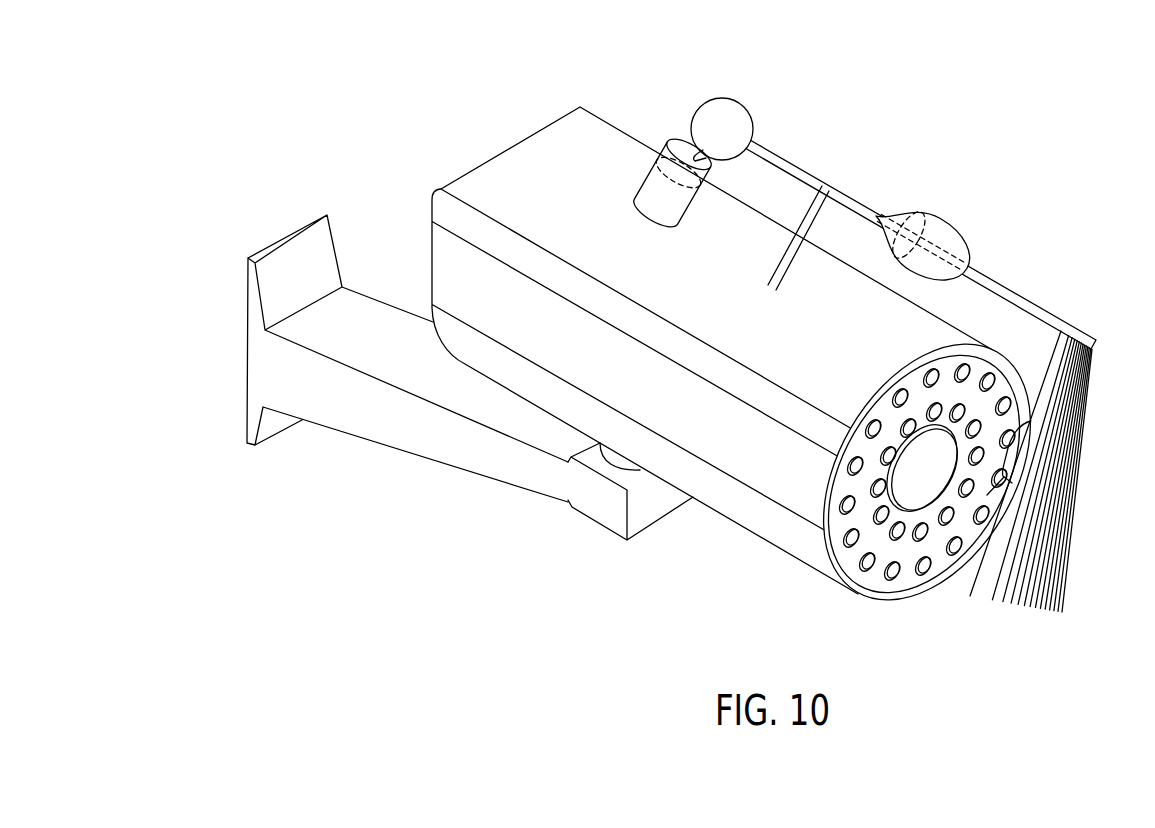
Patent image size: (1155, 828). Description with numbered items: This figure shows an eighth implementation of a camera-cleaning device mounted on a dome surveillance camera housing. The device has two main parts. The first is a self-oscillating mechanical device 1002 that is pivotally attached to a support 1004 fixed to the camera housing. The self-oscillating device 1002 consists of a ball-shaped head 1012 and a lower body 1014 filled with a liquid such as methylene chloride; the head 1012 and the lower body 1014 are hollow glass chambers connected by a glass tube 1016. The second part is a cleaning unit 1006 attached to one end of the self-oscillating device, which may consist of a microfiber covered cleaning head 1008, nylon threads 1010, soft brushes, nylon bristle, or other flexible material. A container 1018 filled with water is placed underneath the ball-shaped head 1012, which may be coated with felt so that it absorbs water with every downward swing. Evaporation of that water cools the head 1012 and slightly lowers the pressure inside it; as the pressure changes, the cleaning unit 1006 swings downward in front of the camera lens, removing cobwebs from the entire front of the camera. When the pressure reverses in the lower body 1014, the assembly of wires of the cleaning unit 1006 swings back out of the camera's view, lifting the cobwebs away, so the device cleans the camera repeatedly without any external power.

The self-oscillating mechanical device 1002 is at (1053, 315).
The support 1004 is at (798, 257).
The cleaning unit 1006 is at (1078, 493).
The microfiber covered cleaning head 1008 is at (1018, 430).
The nylon threads 1010 is at (1060, 610).
The ball-shaped head 1012 is at (730, 96).
The lower body 1014 is at (943, 220).
The glass tube 1016 is at (903, 230).
The container 1018 is at (687, 221).